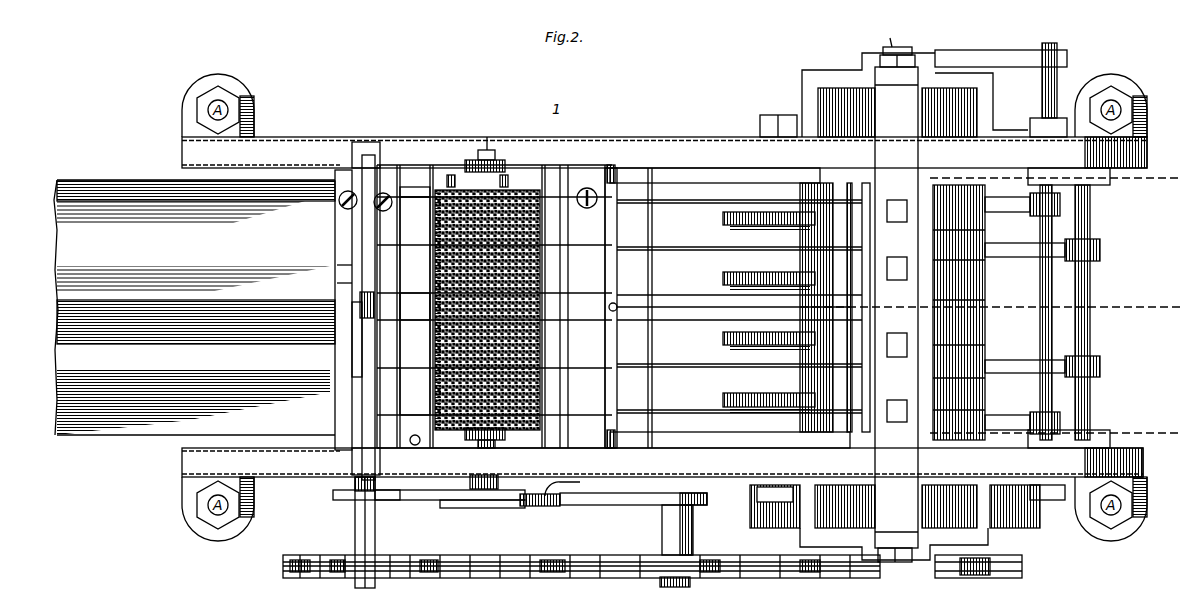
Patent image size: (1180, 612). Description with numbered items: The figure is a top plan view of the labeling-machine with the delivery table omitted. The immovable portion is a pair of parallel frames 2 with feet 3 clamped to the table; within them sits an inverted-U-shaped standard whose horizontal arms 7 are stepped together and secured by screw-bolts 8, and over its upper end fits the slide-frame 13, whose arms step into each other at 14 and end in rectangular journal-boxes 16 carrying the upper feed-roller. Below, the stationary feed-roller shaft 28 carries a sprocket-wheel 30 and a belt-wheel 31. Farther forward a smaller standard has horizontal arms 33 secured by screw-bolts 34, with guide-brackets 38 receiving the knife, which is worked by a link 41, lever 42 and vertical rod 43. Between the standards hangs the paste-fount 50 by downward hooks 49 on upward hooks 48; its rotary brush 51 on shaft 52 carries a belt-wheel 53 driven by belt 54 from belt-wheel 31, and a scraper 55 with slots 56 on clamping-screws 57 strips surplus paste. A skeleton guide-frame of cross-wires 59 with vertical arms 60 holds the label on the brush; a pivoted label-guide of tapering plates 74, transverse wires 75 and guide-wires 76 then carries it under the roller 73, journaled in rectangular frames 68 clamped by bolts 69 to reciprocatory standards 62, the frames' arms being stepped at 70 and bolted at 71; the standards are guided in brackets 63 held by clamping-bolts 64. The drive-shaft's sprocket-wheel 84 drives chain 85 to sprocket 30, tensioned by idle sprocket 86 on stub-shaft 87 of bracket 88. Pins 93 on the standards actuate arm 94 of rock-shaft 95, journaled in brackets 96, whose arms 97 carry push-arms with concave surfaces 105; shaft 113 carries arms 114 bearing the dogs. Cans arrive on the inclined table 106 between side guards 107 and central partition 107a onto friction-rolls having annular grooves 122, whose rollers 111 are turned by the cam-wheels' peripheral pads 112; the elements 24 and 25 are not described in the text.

The parallel frames 2 is at (730, 308).
The feet or flanges 3 is at (195, 88).
The horizontal arms 7 is at (334, 226).
The screw-bolts 8 is at (348, 210).
The inverted-U-shaped frame (slide-frame) 13 is at (360, 266).
The stepped joint 14 is at (360, 284).
The rectangular journal-boxes 16 is at (366, 146).
The plate 24 is at (355, 346).
The block 25 is at (378, 305).
The shaft 28 is at (355, 530).
The sprocket-wheel 30 is at (300, 553).
The belt-wheel 31 is at (340, 500).
The horizontal arms 33 is at (586, 306).
The screw-bolts 34 is at (587, 188).
The guide-brackets 38 is at (621, 164).
The link 41 is at (616, 312).
The lever 42 is at (617, 270).
The vertical rod 43 is at (622, 451).
The upwardly-disposed hooks 48 is at (494, 313).
The downwardly-disposed hooks 49 is at (484, 313).
The paste-fount 50 is at (462, 168).
The rotary brush 51 is at (551, 306).
The shaft 52 is at (487, 134).
The belt-wheel 53 is at (522, 502).
The belt 54 is at (440, 500).
The scraper 55 is at (415, 306).
The slots 56 is at (415, 312).
The clamping-screws 57 is at (383, 306).
The cross-wires 59 is at (479, 306).
The vertical arms 60 is at (484, 317).
The vertical standards 62 is at (896, 308).
The brackets 63 is at (880, 52).
The clamping-bolts 64 is at (1050, 510).
The rectangular frames 68 is at (676, 307).
The bolts 69 is at (905, 56).
The stepped arms joint 70 is at (881, 307).
The bolts 71 is at (897, 311).
The roller 73 is at (868, 308).
The forwardly-tapering parallel plates 74 is at (698, 186).
The transverse wires or strips 75 is at (700, 310).
The guide-wires 76 is at (678, 295).
The sprocket-wheel 84 is at (970, 578).
The power-transmitting chain 85 is at (508, 578).
The idle sprocket-wheel 86 is at (692, 580).
The stub-shaft 87 is at (677, 530).
The bracket 88 is at (598, 500).
The pins 93 is at (887, 35).
The arm 94 is at (978, 54).
The rock-shaft 95 is at (990, 293).
The brackets 96 is at (1055, 308).
The parallel arms 97 is at (1022, 313).
The concave surfaces 105 is at (769, 287).
The inclined plane or table 106 is at (436, 334).
The side guards 107 is at (128, 195).
The central partition 107a is at (386, 311).
The rollers 111 is at (896, 308).
The peripheral pads 112 is at (1018, 520).
The shaft 113 is at (1085, 330).
The arms 114 is at (1018, 248).
The annular grooves 122 is at (870, 215).